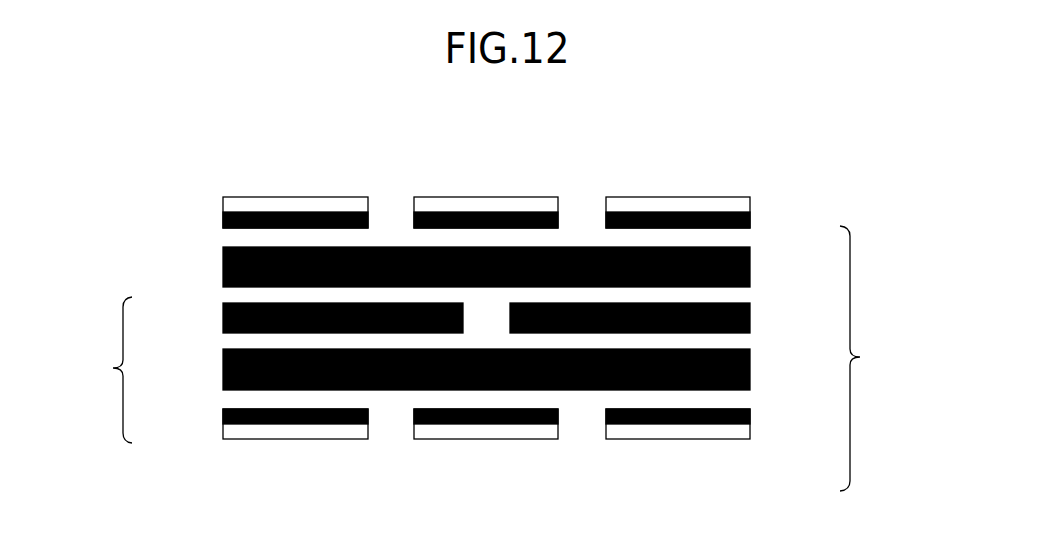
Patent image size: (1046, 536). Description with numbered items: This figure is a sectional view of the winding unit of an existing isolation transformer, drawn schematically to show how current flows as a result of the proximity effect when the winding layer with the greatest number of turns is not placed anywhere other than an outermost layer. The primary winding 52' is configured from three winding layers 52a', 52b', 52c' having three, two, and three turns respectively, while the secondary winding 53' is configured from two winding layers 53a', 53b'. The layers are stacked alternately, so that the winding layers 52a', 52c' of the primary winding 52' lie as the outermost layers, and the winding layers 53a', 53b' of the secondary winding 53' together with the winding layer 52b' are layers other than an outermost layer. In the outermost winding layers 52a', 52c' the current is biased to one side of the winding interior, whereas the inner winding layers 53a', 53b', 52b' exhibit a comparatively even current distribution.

The primary winding 52' is at (875, 358).
The winding layer 52a' is at (528, 228).
The winding layer 52b' is at (528, 337).
The winding layer 52c' is at (528, 448).
The secondary winding 53' is at (103, 370).
The winding layer 53a' is at (443, 289).
The winding layer 53b' is at (443, 393).